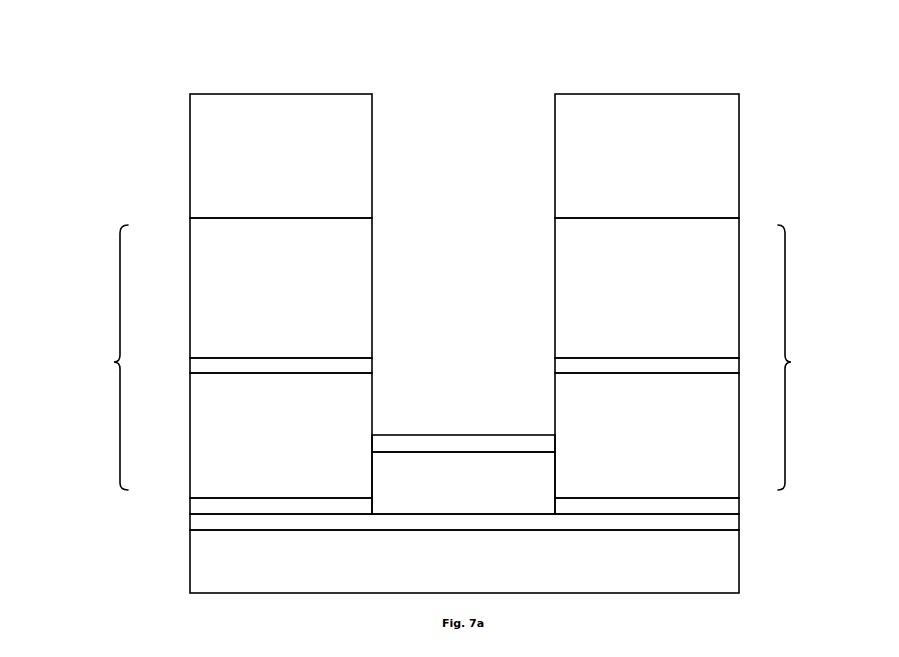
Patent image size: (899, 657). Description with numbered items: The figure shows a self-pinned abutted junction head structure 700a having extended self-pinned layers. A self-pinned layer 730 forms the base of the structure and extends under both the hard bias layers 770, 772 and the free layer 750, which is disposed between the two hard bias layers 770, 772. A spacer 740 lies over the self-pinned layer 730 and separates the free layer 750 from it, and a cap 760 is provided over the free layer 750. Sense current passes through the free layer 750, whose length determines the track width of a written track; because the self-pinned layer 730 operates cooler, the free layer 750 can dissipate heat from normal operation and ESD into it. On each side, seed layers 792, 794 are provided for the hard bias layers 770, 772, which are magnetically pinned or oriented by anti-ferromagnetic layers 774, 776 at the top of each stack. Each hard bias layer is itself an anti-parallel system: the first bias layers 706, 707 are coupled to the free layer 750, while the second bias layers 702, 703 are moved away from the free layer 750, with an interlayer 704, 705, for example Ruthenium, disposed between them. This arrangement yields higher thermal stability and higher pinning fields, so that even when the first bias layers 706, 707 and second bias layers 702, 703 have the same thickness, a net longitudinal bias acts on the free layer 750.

The self-pinned abutted junction head structure 700a is at (116, 73).
The second bias layer 702 is at (373, 255).
The second bias layer 703 is at (555, 280).
The interlayer 704 is at (373, 363).
The interlayer 705 is at (555, 362).
The first bias layer 706 is at (373, 404).
The first bias layer 707 is at (555, 402).
The self-pinned layer 730 is at (730, 568).
The spacer 740 is at (724, 521).
The free layer 750 is at (448, 460).
The cap 760 is at (472, 443).
The hard bias layer 770 is at (232, 358).
The hard bias layer 772 is at (686, 358).
The anti-ferromagnetic layer 774 is at (190, 178).
The anti-ferromagnetic layer 776 is at (740, 147).
The seed layer 792 is at (205, 507).
The seed layer 794 is at (730, 505).